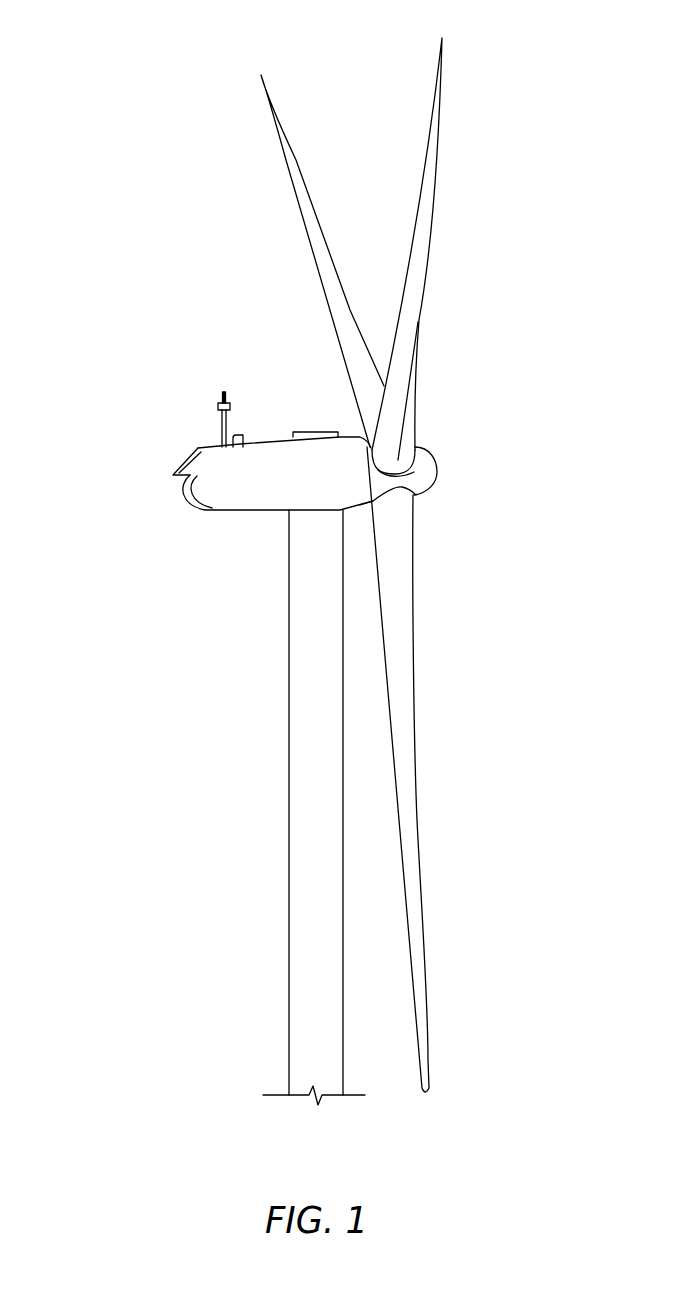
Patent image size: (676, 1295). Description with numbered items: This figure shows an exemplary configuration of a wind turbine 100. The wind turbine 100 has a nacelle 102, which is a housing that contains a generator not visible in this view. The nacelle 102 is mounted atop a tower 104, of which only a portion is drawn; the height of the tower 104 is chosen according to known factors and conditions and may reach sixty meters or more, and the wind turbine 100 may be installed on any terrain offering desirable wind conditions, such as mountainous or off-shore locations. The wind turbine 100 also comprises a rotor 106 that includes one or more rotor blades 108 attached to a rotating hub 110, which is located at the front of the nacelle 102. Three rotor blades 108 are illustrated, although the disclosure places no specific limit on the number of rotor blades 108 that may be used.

The wind turbine 100 is at (144, 54).
The nacelle 102 is at (223, 510).
The tower 104 is at (289, 750).
The rotor 106 is at (467, 292).
The rotor blades 108 is at (278, 110).
The rotating hub 110 is at (437, 472).